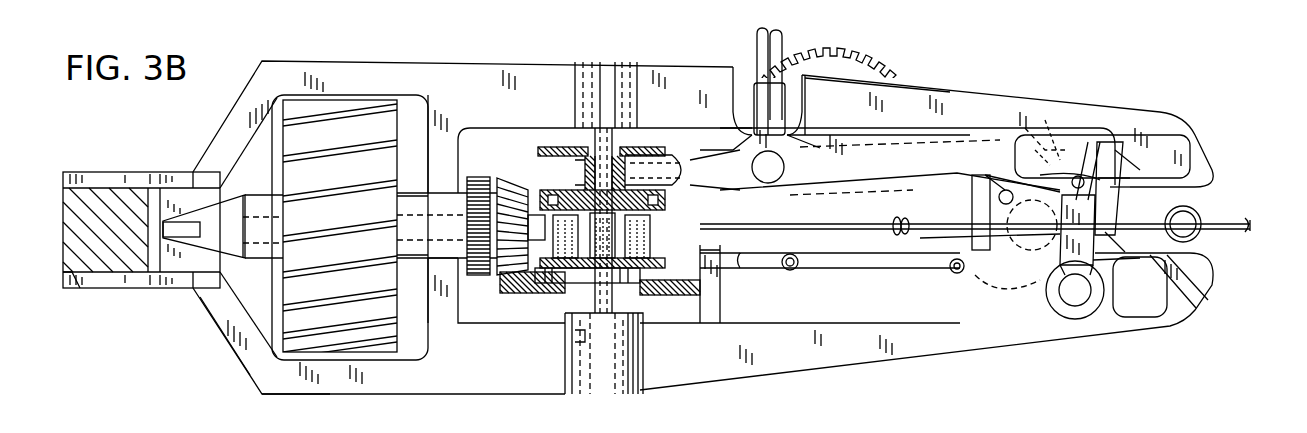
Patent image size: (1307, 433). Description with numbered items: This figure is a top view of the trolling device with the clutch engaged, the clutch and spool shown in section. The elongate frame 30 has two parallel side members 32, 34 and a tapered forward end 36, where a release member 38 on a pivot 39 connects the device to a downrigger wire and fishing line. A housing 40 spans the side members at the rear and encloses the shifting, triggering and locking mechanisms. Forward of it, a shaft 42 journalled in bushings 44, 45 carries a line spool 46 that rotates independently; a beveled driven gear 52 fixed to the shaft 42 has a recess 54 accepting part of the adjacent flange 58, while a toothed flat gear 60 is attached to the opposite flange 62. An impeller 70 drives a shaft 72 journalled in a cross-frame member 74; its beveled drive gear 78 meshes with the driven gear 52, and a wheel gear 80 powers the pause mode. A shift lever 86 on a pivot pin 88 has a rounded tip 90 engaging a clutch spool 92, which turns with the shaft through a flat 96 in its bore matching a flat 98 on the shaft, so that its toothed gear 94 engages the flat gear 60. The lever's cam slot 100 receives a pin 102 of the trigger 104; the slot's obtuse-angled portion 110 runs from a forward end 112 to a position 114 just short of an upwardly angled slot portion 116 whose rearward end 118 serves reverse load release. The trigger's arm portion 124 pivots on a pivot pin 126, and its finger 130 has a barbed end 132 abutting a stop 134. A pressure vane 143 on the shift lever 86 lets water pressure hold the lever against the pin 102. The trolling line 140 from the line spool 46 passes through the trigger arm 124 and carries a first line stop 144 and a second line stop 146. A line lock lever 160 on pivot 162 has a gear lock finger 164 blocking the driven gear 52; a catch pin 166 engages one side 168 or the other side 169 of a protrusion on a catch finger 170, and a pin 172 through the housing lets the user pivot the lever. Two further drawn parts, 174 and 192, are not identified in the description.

The elongate frame 30 is at (240, 90).
The side member 32 is at (352, 70).
The side member 34 is at (327, 394).
The tapered forward end 36 is at (222, 336).
The release member 38 is at (103, 203).
The pivot 39 is at (78, 289).
The housing 40 is at (898, 315).
The shaft 42 is at (572, 332).
The bushing 44 is at (640, 92).
The bushing 45 is at (566, 358).
The line spool 46 is at (518, 287).
The beveled driven gear 52 is at (695, 300).
The recess 54 is at (667, 293).
The flange 58 is at (660, 255).
The toothed flat gear 60 is at (665, 205).
The flange 62 is at (655, 217).
The impeller 70 is at (367, 125).
The shaft 72 is at (444, 237).
The cross-frame member 74 is at (425, 285).
The beveled drive gear 78 is at (508, 283).
The wheel gear 80 is at (480, 175).
The shift lever 86 is at (928, 130).
The pivot pin 88 is at (792, 160).
The rounded tip 90 is at (575, 170).
The clutch spool 92 is at (545, 145).
The toothed gear 94 is at (675, 190).
The flat 96 is at (606, 150).
The flat 98 is at (590, 152).
The cam slot 100 is at (1067, 168).
The pin 102 is at (1105, 180).
The trigger 104 is at (1100, 258).
The obtuse-angled portion 110 is at (1078, 178).
The forward end 112 is at (995, 108).
The position 114 is at (1118, 152).
The upwardly angled slot portion 116 is at (1120, 140).
The rearward end 118 is at (1170, 128).
The arm portion 124 is at (1100, 246).
The pivot pin 126 is at (1075, 303).
The finger 130 is at (1050, 137).
The barbed end 132 is at (995, 127).
The stop 134 is at (1040, 130).
The trolling line 140 is at (1228, 232).
The pressure vane 143 is at (750, 50).
The first line stop 144 is at (1200, 212).
The second line stop 146 is at (893, 222).
The line lock lever 160 is at (865, 265).
The pivot 162 is at (795, 271).
The gear lock finger 164 is at (746, 262).
The catch pin 166 is at (1050, 246).
The side of protrusion 168 is at (1010, 178).
The side of protrusion 169 is at (975, 185).
The catch finger 170 is at (958, 232).
The pin 172 is at (952, 273).
The link 174 is at (955, 182).
The ratchet gear 192 is at (878, 55).